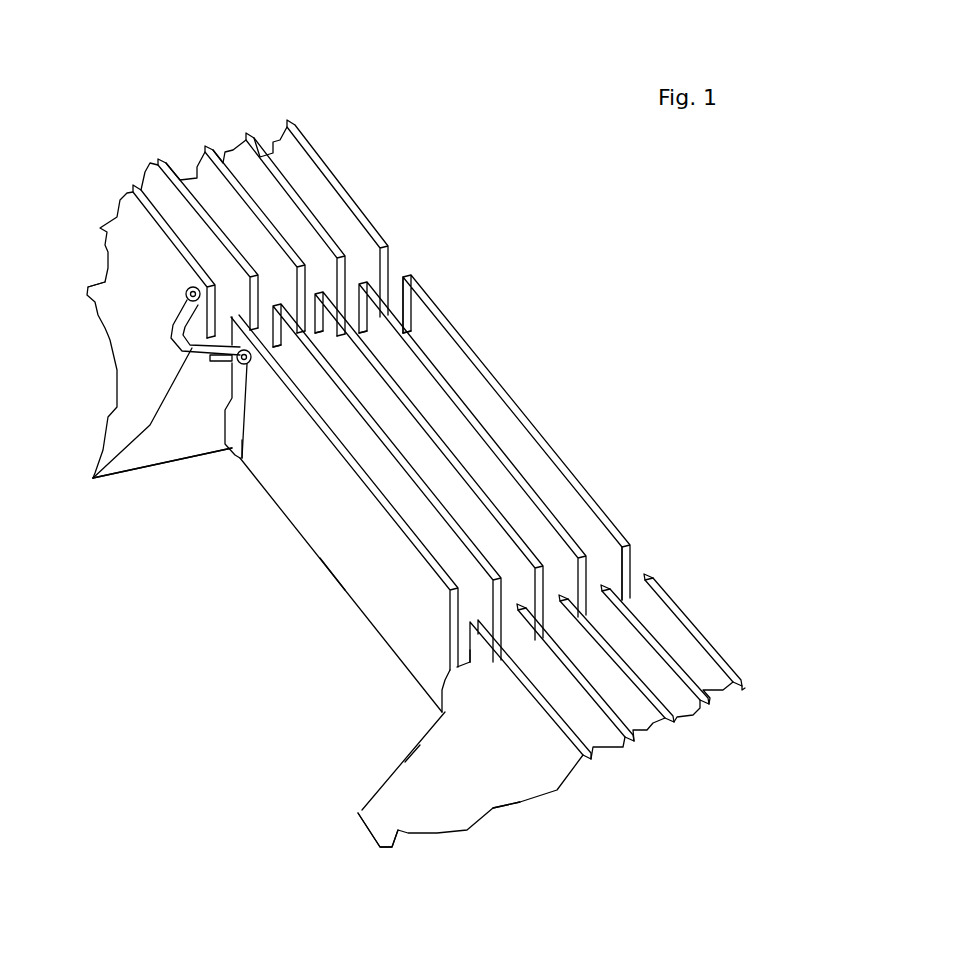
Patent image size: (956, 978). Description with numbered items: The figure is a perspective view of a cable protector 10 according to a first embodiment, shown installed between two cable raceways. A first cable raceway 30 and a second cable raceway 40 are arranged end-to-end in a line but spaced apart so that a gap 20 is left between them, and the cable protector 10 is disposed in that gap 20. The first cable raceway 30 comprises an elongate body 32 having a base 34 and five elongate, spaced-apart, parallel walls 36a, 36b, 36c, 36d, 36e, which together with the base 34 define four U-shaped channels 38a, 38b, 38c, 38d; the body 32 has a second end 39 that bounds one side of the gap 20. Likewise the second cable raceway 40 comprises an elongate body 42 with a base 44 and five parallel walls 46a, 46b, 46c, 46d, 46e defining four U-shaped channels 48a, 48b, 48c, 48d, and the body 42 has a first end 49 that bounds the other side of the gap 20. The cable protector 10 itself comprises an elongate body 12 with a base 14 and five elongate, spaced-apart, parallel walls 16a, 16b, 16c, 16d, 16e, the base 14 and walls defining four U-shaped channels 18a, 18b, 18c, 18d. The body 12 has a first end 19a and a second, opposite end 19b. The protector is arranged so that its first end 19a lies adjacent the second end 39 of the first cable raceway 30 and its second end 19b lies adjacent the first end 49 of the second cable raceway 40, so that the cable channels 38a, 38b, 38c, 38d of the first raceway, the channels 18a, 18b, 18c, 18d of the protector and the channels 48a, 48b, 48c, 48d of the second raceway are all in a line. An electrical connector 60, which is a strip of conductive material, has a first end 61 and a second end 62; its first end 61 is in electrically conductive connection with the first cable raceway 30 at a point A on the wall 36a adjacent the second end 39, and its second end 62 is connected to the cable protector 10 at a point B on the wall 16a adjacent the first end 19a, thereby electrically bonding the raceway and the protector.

The cable protector 10 is at (674, 362).
The elongate body 12 is at (355, 585).
The base 14 is at (337, 578).
The wall 16a is at (375, 490).
The wall 16b is at (423, 490).
The wall 16c is at (477, 492).
The wall 16d is at (535, 500).
The wall 16e is at (588, 509).
The U-shaped channel 18a is at (332, 413).
The U-shaped channel 18b is at (382, 413).
The U-shaped channel 18c is at (433, 413).
The U-shaped channel 18d is at (483, 413).
The first end 19a is at (404, 283).
The second end 19b is at (629, 553).
The gap 20 is at (220, 578).
The first cable raceway 30 is at (323, 137).
The elongate body 32 is at (117, 277).
The base 34 is at (230, 448).
The wall 36a is at (132, 197).
The wall 36b is at (180, 192).
The wall 36c is at (217, 160).
The wall 36d is at (250, 148).
The wall 36e is at (290, 132).
The U-shaped channel 38a is at (207, 260).
The U-shaped channel 38b is at (257, 260).
The U-shaped channel 38c is at (305, 260).
The U-shaped channel 38d is at (357, 260).
The second end 39 is at (219, 387).
The second cable raceway 40 is at (760, 663).
The elongate body 42 is at (499, 766).
The base 44 is at (367, 833).
The wall 46a is at (582, 755).
The wall 46b is at (622, 737).
The wall 46c is at (660, 718).
The wall 46d is at (695, 700).
The wall 46e is at (729, 684).
The U-shaped channel 48a is at (547, 683).
The U-shaped channel 48b is at (597, 683).
The U-shaped channel 48c is at (647, 683).
The U-shaped channel 48d is at (698, 681).
The first end 49 is at (415, 757).
The electrical connector 60 is at (178, 336).
The first end 61 is at (191, 291).
The second end 62 is at (242, 458).
The point A is at (190, 297).
The point B is at (243, 362).